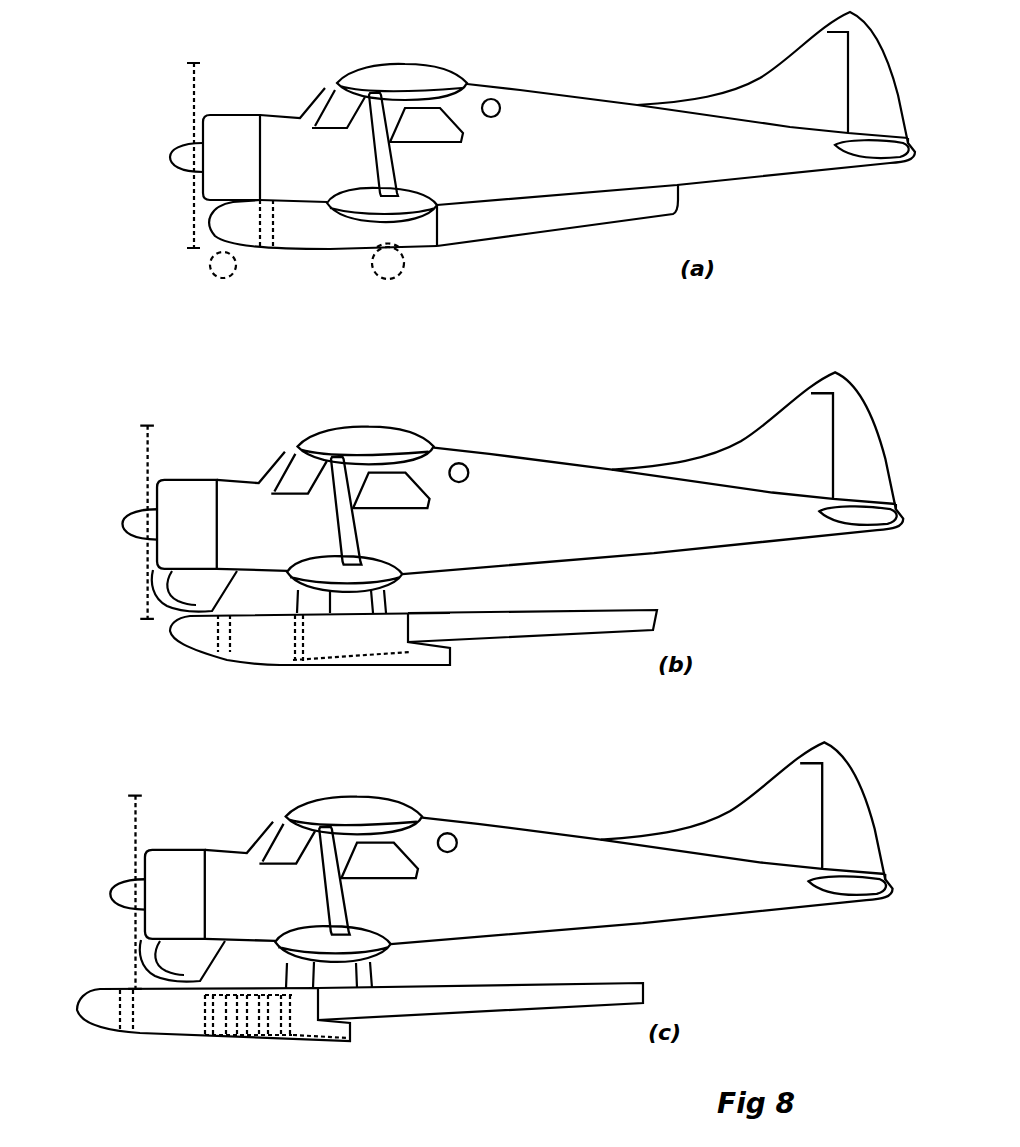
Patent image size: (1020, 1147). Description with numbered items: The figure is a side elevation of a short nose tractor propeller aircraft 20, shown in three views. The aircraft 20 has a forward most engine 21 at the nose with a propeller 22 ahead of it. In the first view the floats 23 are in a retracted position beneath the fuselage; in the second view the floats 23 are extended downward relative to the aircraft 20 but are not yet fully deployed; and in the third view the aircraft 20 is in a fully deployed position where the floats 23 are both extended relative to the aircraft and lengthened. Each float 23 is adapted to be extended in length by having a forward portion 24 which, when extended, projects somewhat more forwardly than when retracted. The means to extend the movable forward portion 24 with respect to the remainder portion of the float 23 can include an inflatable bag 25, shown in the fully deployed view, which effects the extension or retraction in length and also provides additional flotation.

The aircraft 20 is at (628, 173).
The engine 21 is at (233, 118).
The propeller 22 is at (195, 97).
The float 23 is at (502, 220).
The forward portion 24 is at (303, 237).
The inflatable bag 25 is at (247, 1007).